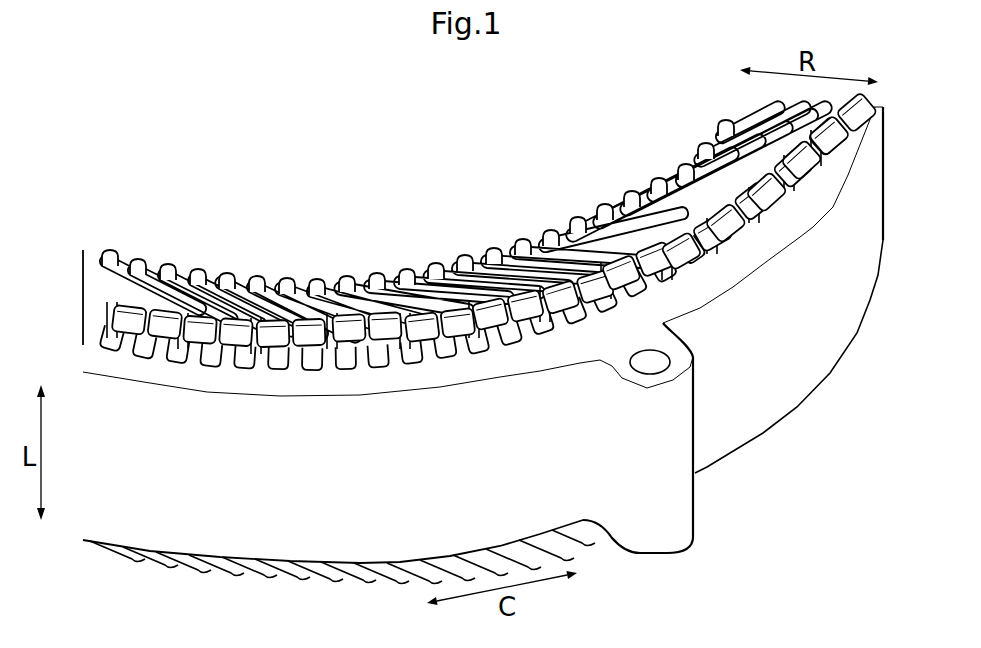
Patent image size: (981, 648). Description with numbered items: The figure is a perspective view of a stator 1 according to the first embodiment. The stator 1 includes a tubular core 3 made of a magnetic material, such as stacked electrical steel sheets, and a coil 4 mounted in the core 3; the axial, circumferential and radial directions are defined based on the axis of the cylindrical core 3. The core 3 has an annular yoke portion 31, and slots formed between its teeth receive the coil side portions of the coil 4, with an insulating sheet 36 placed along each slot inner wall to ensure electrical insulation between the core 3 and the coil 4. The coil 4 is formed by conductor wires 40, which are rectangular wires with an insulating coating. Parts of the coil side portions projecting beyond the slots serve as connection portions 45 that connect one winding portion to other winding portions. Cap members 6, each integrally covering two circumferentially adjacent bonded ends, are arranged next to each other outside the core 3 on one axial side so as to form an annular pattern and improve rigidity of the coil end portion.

The stator 1 is at (508, 300).
The core 3 is at (508, 345).
The yoke portion 31 is at (813, 196).
The coil 4 is at (488, 243).
The conductor wires 40 is at (633, 187).
The connection portions 45 is at (460, 285).
The insulating sheet 36 is at (273, 363).
The cap member 6 is at (380, 380).